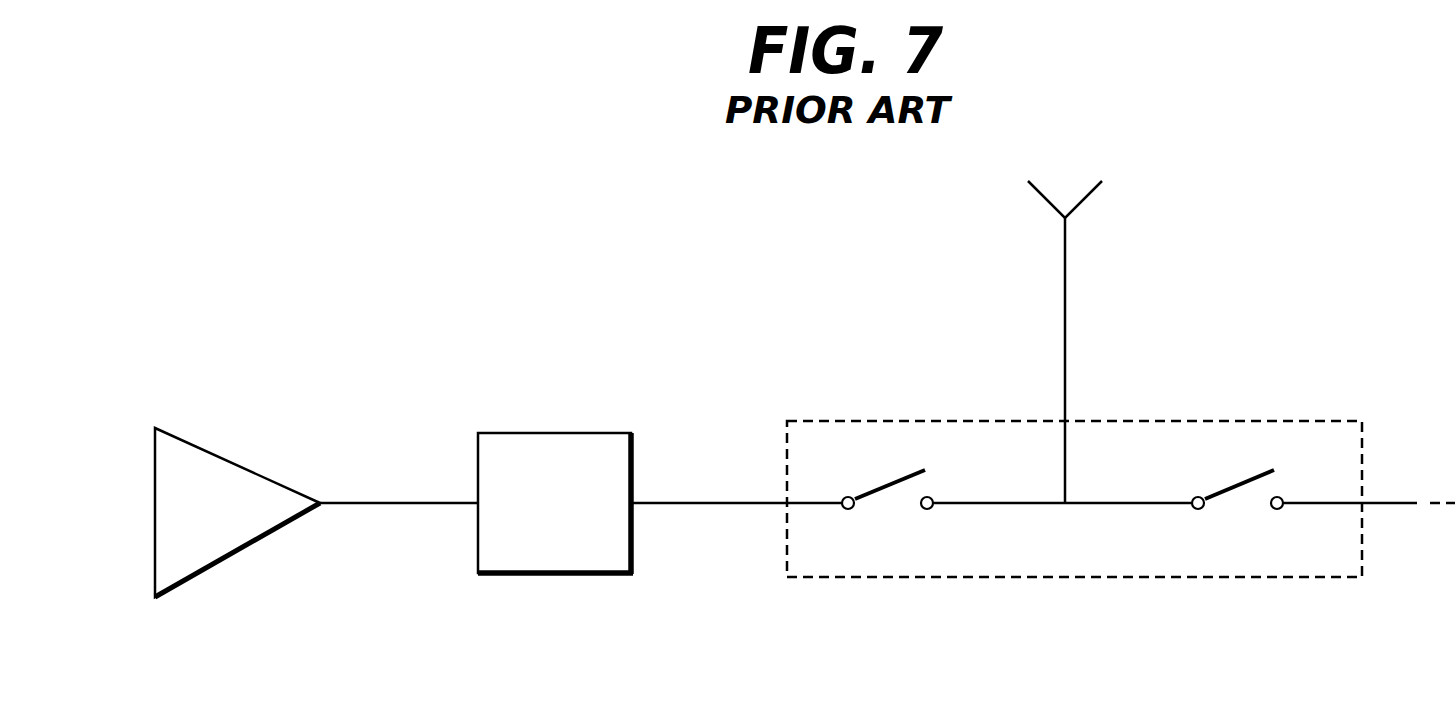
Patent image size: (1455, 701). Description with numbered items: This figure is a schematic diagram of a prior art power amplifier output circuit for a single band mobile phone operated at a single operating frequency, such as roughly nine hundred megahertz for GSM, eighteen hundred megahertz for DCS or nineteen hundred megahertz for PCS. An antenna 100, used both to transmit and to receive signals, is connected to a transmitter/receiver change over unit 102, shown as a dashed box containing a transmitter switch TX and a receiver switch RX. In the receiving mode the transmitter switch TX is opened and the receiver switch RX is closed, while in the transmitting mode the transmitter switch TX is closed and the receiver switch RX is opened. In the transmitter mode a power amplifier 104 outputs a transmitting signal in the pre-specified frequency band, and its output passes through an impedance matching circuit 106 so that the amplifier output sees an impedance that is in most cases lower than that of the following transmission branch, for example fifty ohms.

The antenna 100 is at (1080, 203).
The transmitter/receiver change over unit 102 is at (1283, 418).
The power amplifier 104 is at (230, 462).
The impedance matching circuit 106 is at (548, 433).